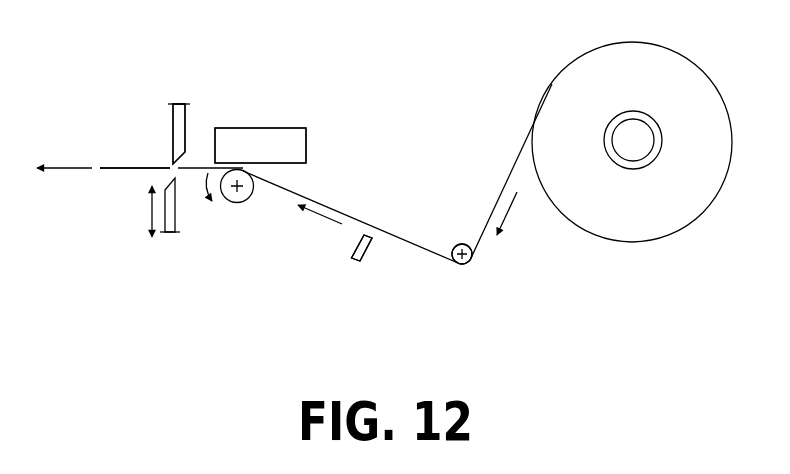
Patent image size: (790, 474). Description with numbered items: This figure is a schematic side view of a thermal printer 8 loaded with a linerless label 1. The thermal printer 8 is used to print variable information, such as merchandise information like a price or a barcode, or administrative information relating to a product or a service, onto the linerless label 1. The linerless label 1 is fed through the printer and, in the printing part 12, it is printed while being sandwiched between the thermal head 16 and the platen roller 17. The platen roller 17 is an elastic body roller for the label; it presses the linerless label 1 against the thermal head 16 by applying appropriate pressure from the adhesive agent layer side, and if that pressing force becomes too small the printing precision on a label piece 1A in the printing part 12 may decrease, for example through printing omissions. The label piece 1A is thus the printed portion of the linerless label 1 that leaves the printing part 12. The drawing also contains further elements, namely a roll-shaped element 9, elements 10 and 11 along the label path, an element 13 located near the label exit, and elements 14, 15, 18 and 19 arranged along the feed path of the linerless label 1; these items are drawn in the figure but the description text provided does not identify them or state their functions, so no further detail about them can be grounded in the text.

The linerless label 1 is at (512, 163).
The label piece 1A is at (118, 166).
The thermal printer 8 is at (430, 137).
The roll of continuous sheet 9 is at (652, 180).
The feed roller unit 10 is at (462, 272).
The sensor unit 11 is at (369, 280).
The printing part 12 is at (251, 124).
The cutter unit 13 is at (183, 95).
The feed roller 14 is at (460, 244).
The sensor 15 is at (366, 257).
The thermal head 16 is at (290, 127).
The platen roller 17 is at (254, 197).
The upper cutter blade 18 is at (173, 132).
The lower cutter blade 19 is at (177, 205).